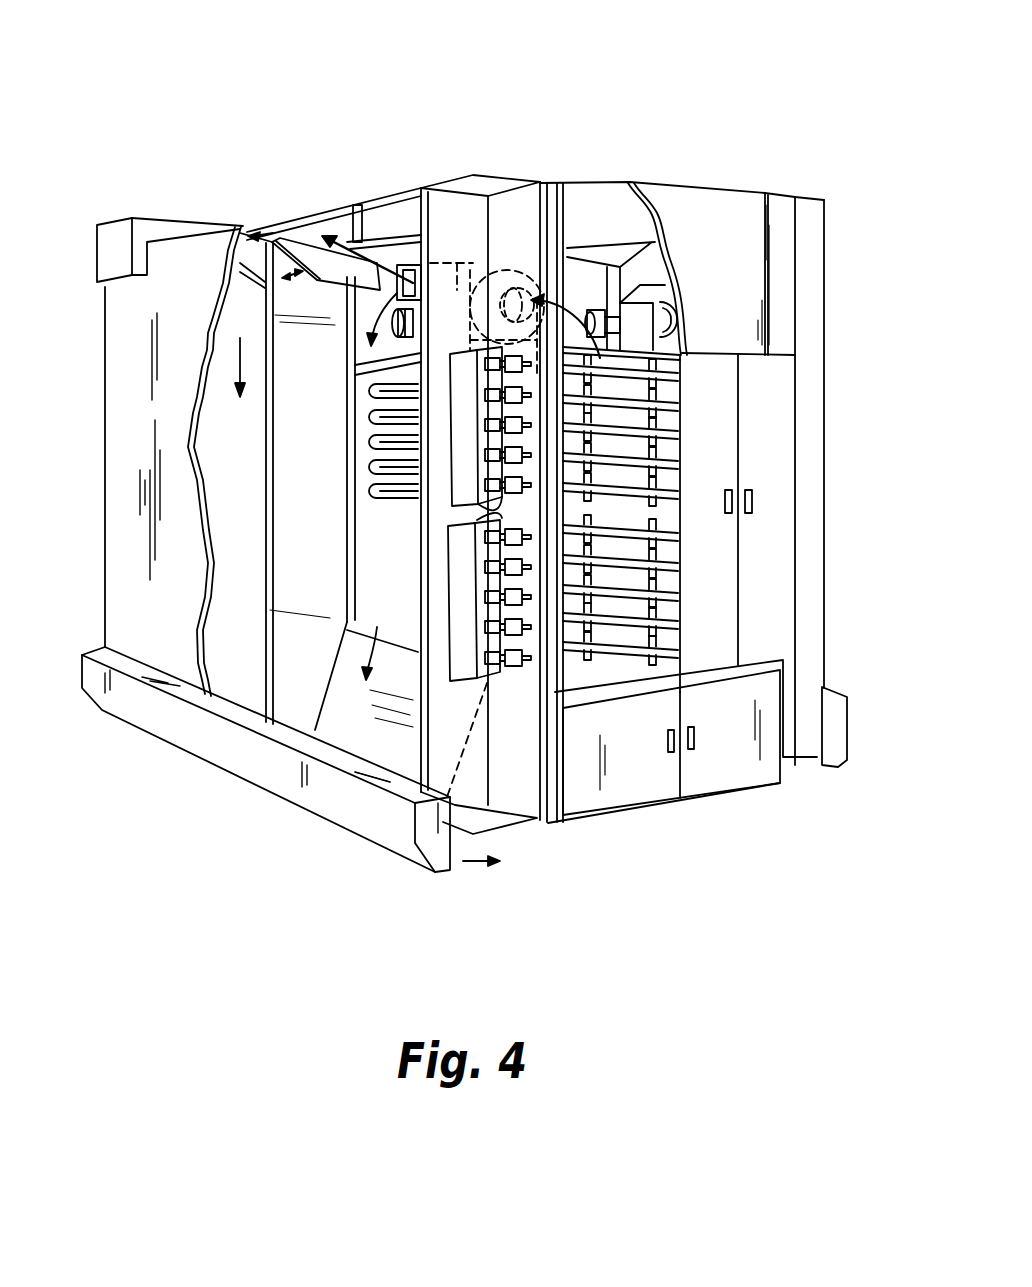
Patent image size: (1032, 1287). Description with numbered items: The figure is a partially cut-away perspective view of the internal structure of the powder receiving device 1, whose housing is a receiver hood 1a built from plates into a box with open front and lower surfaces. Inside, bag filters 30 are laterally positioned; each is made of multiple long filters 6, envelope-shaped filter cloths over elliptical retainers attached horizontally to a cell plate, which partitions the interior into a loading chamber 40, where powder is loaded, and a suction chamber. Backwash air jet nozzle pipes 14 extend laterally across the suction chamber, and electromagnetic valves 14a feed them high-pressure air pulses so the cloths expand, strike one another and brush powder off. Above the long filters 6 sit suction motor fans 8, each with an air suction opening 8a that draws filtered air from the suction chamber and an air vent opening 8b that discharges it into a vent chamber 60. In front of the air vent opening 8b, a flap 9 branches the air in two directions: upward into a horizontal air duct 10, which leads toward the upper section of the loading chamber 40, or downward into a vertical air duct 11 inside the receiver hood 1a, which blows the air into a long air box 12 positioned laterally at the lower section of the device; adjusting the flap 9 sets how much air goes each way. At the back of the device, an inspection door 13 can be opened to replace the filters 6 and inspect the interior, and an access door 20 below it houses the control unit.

The powder receiving device 1 is at (681, 77).
The receiver hood 1a is at (175, 255).
The long filter 6 is at (365, 445).
The suction motor fan 8 is at (452, 238).
The air suction opening 8a is at (505, 270).
The air vent opening 8b is at (362, 320).
The flap 9 is at (318, 252).
The horizontal air duct 10 is at (295, 230).
The vertical air duct 11 is at (292, 685).
The air box 12 is at (282, 765).
The inspection door 13 is at (775, 600).
The backwash air jet nozzle pipe 14 is at (483, 505).
The electromagnetic valve 14a is at (485, 468).
The access door 20 is at (725, 760).
The bag filter 30 is at (443, 647).
The loading chamber 40 is at (236, 550).
The vent chamber 60 is at (403, 226).